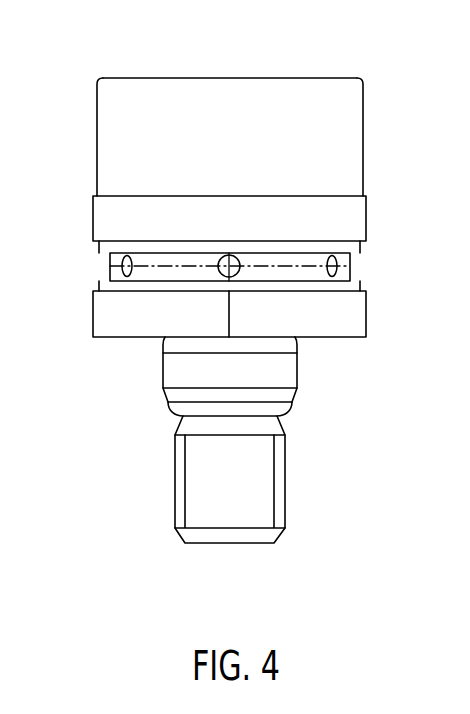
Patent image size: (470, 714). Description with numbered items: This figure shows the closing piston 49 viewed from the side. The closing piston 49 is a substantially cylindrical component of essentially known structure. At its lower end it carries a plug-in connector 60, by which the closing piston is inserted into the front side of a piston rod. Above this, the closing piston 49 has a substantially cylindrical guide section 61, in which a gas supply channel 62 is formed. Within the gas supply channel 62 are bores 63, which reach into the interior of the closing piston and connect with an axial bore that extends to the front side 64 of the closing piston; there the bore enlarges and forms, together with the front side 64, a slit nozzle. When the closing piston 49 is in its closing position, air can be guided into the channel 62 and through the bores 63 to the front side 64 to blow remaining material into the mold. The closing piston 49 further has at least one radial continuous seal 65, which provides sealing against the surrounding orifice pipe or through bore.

The closing piston 49 is at (383, 87).
The plug-in connector 60 is at (296, 463).
The guide section 61 is at (363, 143).
The gas supply channel 62 is at (355, 269).
The bores 63 is at (110, 259).
The front side 64 is at (180, 77).
The radial continuous seal 65 is at (93, 213).